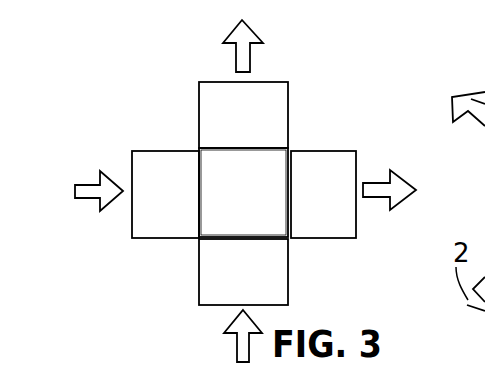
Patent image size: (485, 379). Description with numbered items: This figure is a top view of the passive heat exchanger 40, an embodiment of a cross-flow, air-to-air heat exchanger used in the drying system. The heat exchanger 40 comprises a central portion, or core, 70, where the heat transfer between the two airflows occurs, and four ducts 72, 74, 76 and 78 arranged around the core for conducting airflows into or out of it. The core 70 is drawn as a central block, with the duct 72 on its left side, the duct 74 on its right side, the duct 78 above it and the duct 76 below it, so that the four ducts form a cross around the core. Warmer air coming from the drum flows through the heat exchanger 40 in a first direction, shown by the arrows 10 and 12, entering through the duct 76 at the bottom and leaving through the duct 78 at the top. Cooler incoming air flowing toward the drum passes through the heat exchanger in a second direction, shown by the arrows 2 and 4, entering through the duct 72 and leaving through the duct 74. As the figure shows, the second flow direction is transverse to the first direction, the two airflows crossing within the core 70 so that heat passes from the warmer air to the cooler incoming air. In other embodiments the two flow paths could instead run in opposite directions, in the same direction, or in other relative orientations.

The heat exchanger 40 is at (141, 75).
The central portion, or core 70 is at (231, 207).
The duct 72 is at (148, 213).
The duct 74 is at (310, 213).
The duct 76 is at (262, 288).
The duct 78 is at (262, 125).
The arrow 2 is at (83, 185).
The arrow 4 is at (377, 182).
The arrow 10 is at (237, 352).
The arrow 12 is at (250, 57).